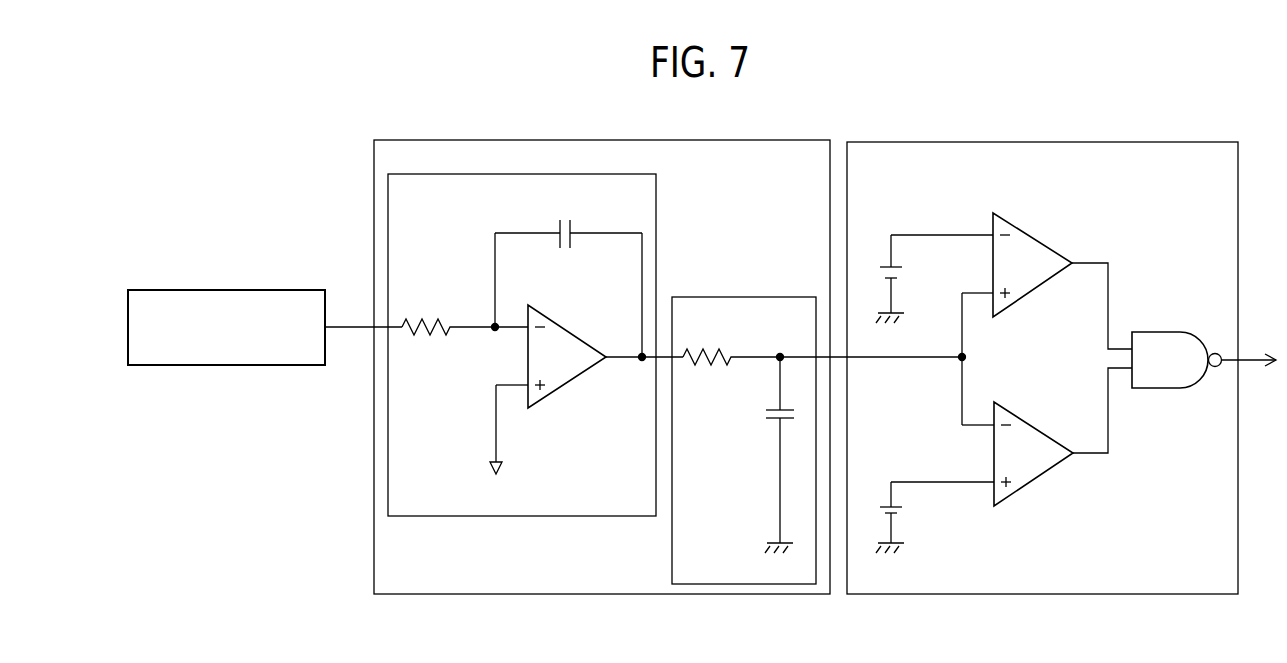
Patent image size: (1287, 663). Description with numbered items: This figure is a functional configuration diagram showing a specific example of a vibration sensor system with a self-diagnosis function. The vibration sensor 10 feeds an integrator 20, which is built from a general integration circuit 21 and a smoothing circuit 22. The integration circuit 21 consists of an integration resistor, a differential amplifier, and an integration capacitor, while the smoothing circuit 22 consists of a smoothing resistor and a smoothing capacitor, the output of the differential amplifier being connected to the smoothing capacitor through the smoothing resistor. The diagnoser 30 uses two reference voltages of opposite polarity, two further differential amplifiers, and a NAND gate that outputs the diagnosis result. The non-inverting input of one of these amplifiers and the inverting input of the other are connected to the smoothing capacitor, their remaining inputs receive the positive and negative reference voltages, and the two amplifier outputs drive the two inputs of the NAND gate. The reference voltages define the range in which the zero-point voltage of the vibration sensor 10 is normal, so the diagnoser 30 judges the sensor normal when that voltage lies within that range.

The vibration sensor 10 is at (243, 290).
The integrator 20 is at (493, 140).
The integration circuit 21 is at (656, 220).
The smoothing circuit 22 is at (707, 295).
The diagnoser 30 is at (965, 142).